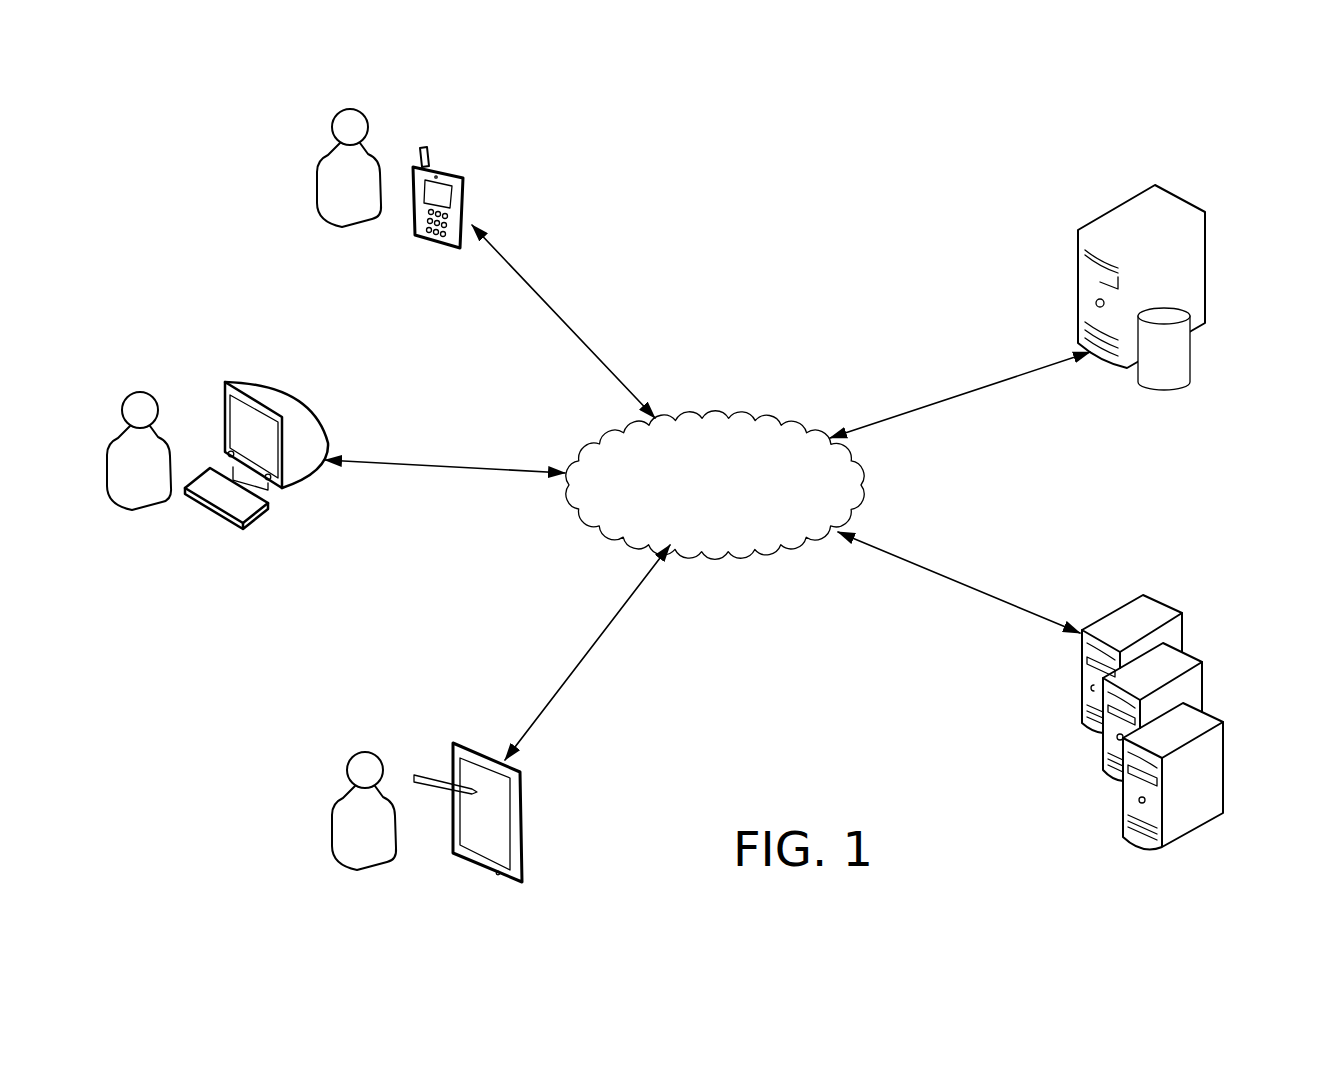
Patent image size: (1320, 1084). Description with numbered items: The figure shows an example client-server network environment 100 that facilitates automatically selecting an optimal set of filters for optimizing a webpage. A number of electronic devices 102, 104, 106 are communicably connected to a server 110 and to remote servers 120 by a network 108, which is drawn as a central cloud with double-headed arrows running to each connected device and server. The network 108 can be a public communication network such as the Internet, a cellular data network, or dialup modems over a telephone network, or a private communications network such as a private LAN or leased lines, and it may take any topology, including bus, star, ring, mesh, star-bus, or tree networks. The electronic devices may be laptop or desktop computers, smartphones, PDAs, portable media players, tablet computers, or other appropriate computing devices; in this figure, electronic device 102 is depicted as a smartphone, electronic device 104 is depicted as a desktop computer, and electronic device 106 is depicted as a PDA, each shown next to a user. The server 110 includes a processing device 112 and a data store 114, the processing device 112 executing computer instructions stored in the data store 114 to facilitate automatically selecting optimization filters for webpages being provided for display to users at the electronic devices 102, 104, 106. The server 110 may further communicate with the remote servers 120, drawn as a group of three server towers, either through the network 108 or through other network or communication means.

The network environment 100 is at (834, 158).
The electronic device 102 is at (452, 168).
The electronic device 104 is at (297, 393).
The electronic device 106 is at (463, 738).
The network 108 is at (712, 415).
The server 110 is at (1153, 279).
The processing device 112 is at (1177, 195).
The data store 114 is at (1192, 363).
The remote servers 120 is at (1080, 809).